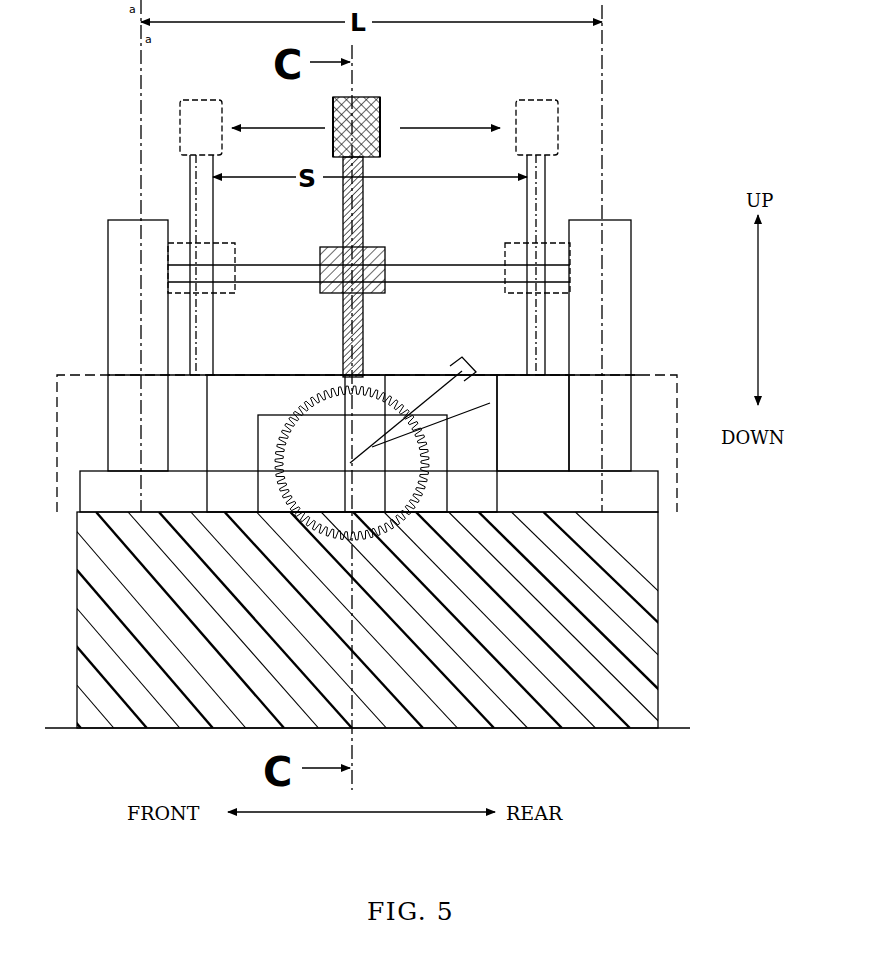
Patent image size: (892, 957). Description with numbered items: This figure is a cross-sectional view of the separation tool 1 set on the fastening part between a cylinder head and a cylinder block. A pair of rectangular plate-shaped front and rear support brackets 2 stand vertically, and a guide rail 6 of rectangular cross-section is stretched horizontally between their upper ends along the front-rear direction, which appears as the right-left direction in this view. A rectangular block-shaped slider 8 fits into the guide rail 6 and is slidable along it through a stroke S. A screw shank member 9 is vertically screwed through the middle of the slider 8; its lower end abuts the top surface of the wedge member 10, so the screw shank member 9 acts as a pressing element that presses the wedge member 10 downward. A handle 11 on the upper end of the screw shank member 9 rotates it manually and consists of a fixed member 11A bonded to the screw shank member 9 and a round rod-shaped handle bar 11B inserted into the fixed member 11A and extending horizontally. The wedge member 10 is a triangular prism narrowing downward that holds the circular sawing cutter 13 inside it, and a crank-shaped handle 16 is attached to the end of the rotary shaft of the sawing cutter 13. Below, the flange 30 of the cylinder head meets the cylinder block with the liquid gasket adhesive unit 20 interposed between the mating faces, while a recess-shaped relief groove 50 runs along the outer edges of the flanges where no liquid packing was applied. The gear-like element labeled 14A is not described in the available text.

The separation tool 1 is at (636, 172).
The front and rear support brackets 2 is at (110, 322).
The guide rail 6 is at (470, 268).
The slider 8 is at (385, 250).
The screw shank member 9 is at (343, 342).
The wedge member 10 is at (250, 375).
The handle 11 is at (383, 103).
The fixed member 11A is at (335, 112).
The round rod-shaped handle bar 11B is at (380, 150).
The circular sawing cutter 13 is at (373, 465).
The gear 14A is at (452, 424).
The handle 16 is at (471, 362).
The liquid gasket adhesive unit 20 is at (658, 658).
The flange 30 is at (645, 500).
The relief groove 50 is at (527, 490).